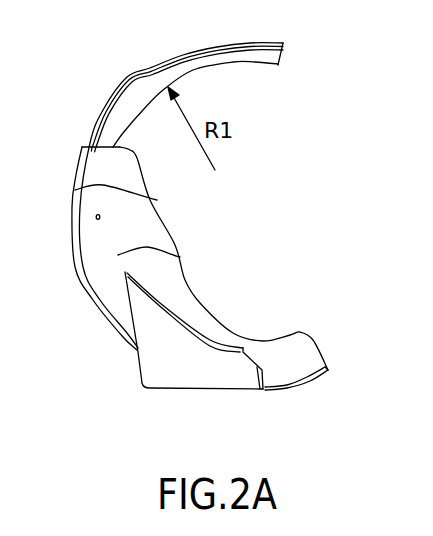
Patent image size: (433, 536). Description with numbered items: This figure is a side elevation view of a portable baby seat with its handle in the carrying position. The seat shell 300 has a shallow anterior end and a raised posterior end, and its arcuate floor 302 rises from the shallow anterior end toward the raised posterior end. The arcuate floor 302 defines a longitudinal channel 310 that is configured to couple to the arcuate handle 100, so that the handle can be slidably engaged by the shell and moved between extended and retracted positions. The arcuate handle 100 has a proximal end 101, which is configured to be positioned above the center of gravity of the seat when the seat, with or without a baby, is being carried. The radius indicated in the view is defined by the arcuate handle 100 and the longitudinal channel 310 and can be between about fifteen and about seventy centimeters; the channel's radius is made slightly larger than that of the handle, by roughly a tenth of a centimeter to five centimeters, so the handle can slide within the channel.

The arcuate handle 100 is at (148, 92).
The proximal end 101 is at (245, 55).
The seat shell 300 is at (180, 257).
The arcuate floor 302 is at (157, 200).
The longitudinal channel 310 is at (293, 360).